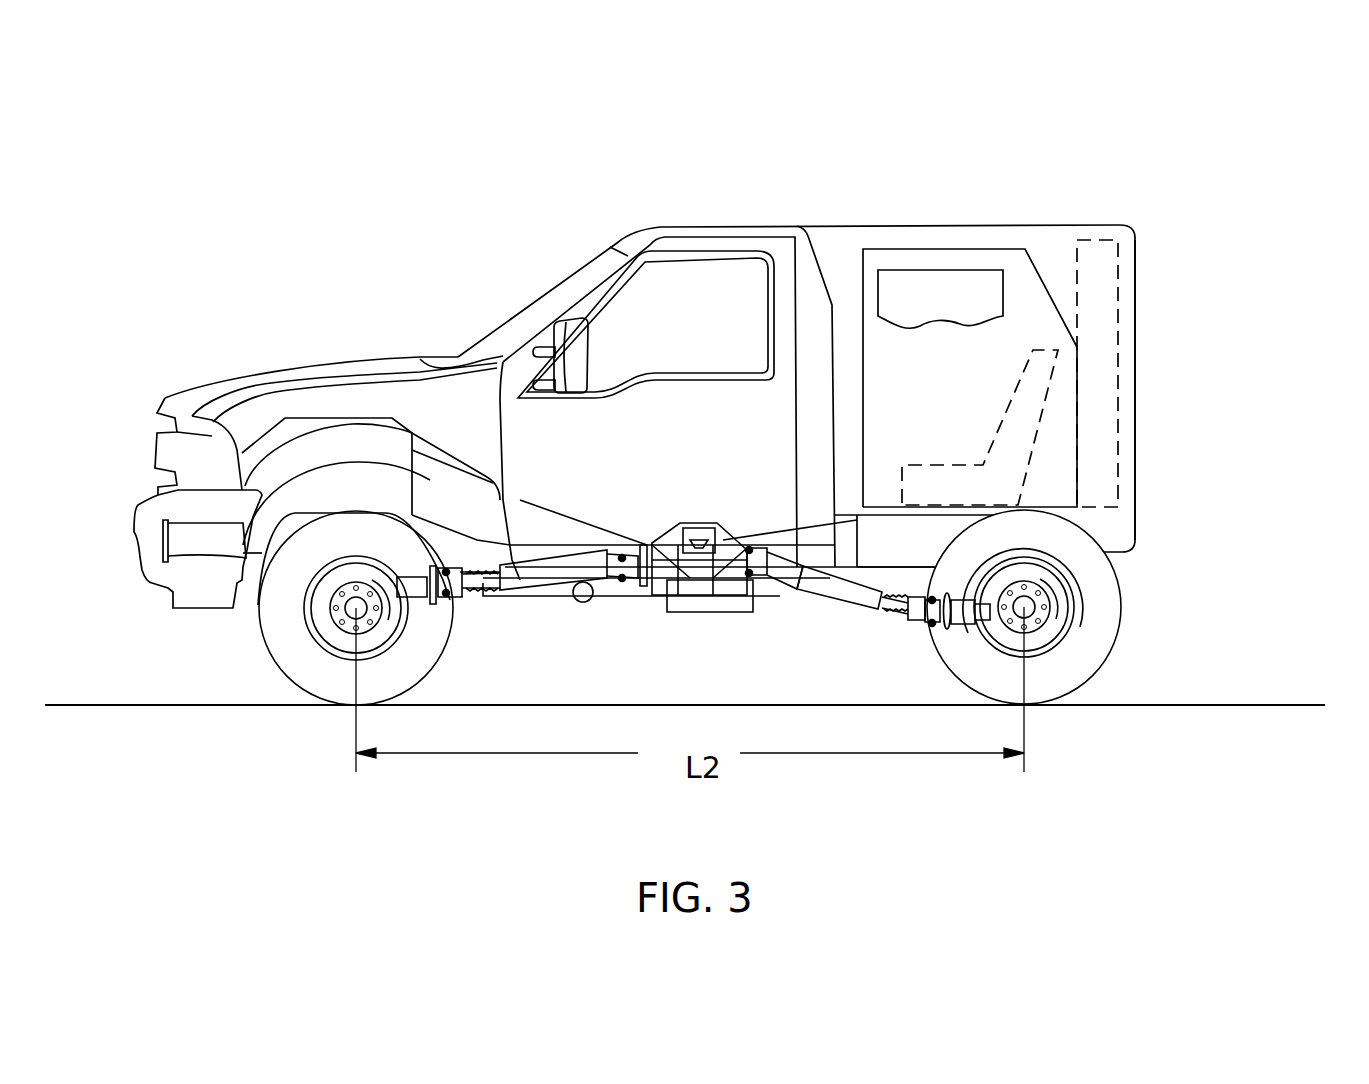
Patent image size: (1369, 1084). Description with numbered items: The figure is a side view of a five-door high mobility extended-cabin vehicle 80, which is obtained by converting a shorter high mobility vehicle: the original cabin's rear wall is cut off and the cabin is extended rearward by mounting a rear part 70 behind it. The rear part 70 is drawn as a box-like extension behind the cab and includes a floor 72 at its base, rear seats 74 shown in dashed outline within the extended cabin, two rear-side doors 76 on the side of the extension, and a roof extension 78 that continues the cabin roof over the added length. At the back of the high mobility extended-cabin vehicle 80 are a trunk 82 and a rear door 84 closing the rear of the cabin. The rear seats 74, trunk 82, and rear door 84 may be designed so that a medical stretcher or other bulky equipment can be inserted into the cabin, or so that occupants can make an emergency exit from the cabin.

The rear part 70 is at (1180, 203).
The floor 72 is at (900, 550).
The rear seats 74 is at (1025, 410).
The rear-side doors 76 is at (953, 427).
The roof extension 78 is at (1113, 224).
The high mobility extended-cabin vehicle 80 is at (238, 192).
The trunk 82 is at (1093, 450).
The rear door 84 is at (1135, 318).